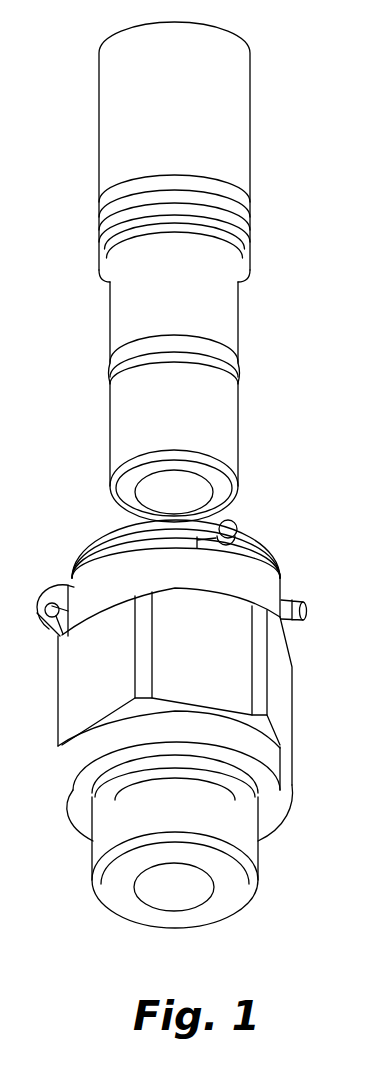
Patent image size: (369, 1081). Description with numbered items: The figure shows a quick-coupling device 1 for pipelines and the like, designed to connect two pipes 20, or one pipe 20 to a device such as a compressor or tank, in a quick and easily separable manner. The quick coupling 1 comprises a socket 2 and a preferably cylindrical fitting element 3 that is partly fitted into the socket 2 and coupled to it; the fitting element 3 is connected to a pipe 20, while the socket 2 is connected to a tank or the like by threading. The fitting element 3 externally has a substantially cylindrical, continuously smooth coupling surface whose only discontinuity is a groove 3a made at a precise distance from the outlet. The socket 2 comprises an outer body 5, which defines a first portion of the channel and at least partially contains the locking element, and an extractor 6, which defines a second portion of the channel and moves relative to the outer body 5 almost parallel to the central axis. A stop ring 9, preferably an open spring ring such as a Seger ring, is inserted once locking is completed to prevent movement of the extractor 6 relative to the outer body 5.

The quick-coupling device 1 is at (267, 924).
The socket 2 is at (303, 825).
The fitting element 3 is at (268, 327).
The groove 3a is at (237, 380).
The outer body 5 is at (72, 707).
The extractor 6 is at (270, 552).
The stop ring 9 is at (53, 586).
The pipe 20 is at (174, 105).